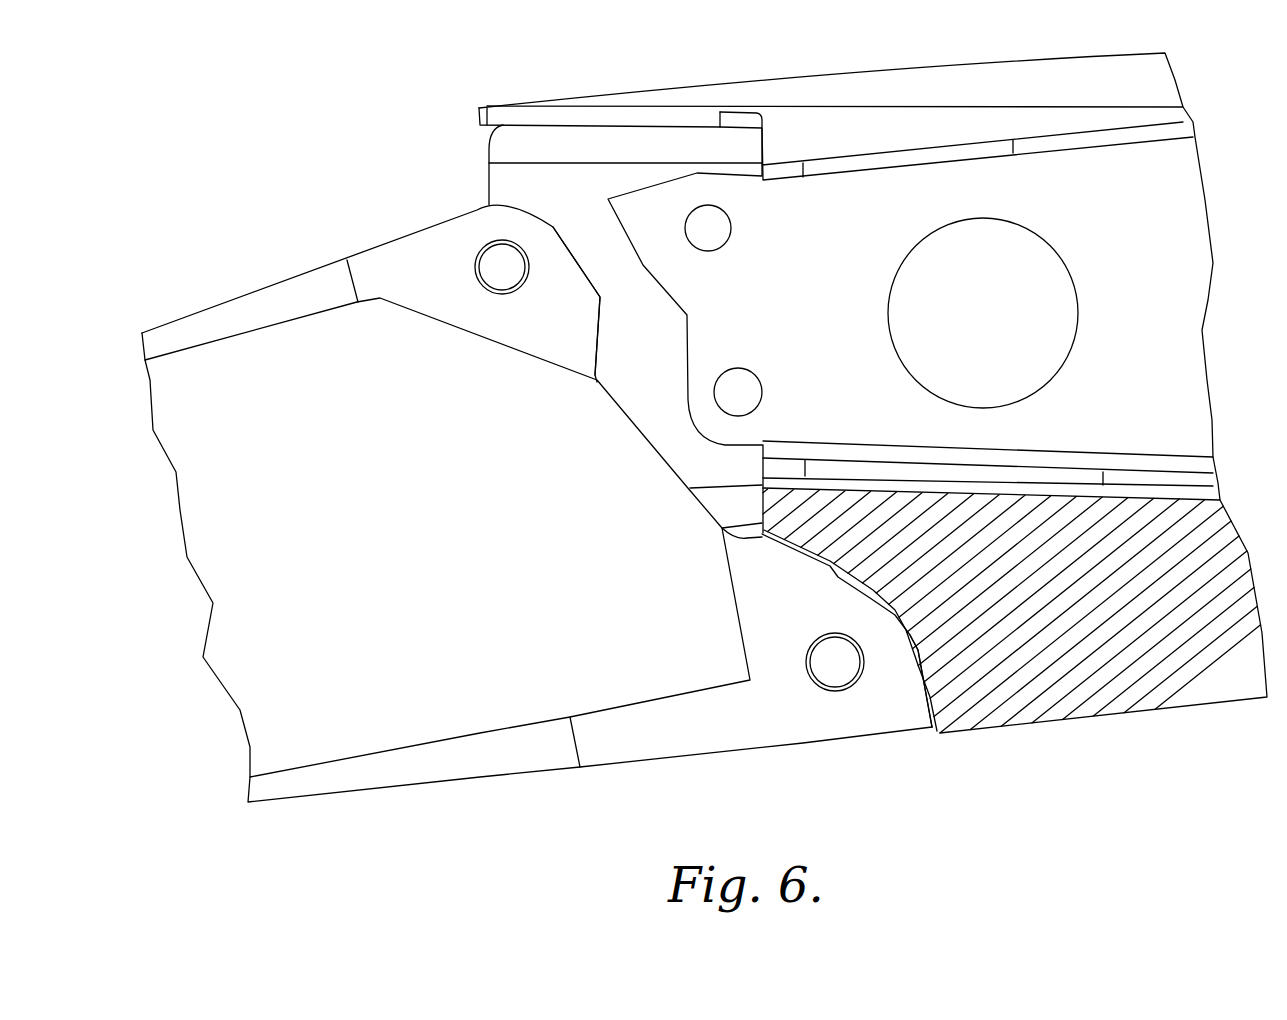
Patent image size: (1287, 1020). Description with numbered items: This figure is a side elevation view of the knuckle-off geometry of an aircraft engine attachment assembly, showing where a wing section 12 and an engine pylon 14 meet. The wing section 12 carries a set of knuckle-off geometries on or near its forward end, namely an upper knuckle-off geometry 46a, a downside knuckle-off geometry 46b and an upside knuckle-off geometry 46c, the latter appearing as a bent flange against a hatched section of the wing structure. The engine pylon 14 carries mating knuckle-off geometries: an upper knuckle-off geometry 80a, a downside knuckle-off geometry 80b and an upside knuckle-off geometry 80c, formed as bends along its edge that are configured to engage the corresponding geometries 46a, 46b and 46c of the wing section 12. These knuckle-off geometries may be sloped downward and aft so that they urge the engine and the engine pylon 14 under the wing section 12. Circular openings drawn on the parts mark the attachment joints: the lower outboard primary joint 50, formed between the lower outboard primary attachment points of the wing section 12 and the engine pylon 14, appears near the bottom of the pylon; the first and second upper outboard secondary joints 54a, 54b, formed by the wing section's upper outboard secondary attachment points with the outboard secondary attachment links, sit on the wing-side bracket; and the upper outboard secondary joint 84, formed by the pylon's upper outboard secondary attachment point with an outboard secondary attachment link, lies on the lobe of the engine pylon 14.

The wing section 12 is at (921, 60).
The engine pylon 14 is at (267, 290).
The upper knuckle-off geometry 46a is at (634, 239).
The downside knuckle-off geometry 46b is at (941, 702).
The upside knuckle-off geometry 46c is at (814, 541).
The lower outboard primary joint 50 is at (804, 691).
The first upper outboard secondary joint 54a is at (776, 378).
The second upper outboard secondary joint 54b is at (746, 220).
The upper knuckle-off geometry 80a is at (577, 279).
The downside knuckle-off geometry 80b is at (916, 692).
The upside knuckle-off geometry 80c is at (794, 558).
The upper outboard secondary joint 84 is at (472, 246).